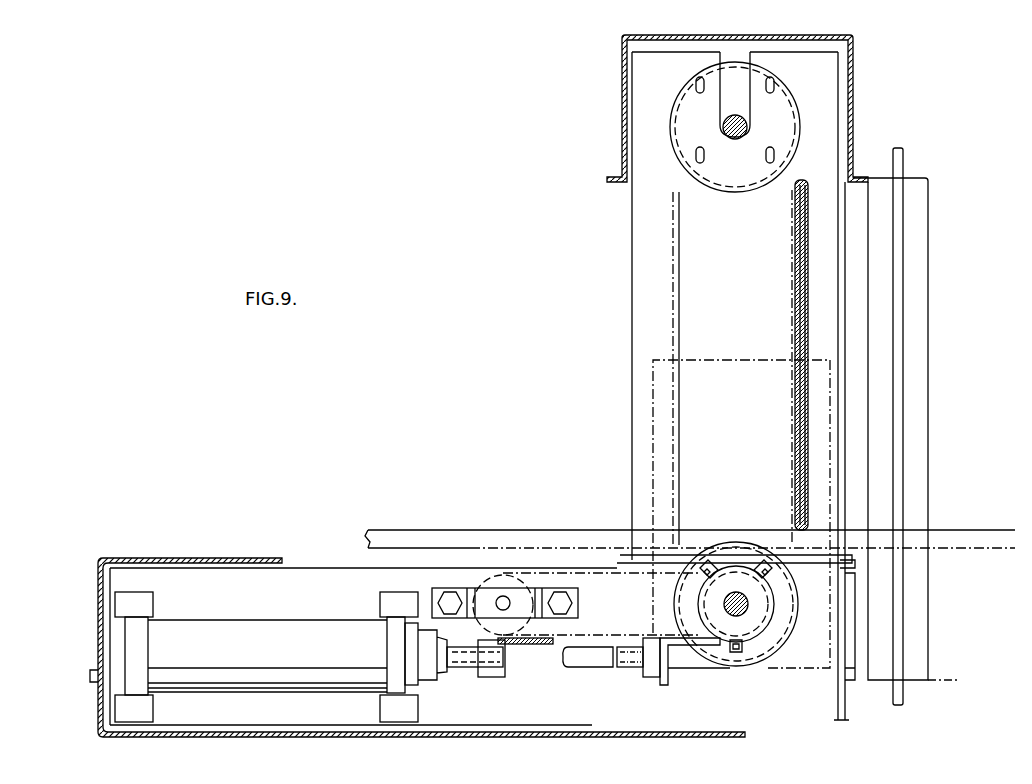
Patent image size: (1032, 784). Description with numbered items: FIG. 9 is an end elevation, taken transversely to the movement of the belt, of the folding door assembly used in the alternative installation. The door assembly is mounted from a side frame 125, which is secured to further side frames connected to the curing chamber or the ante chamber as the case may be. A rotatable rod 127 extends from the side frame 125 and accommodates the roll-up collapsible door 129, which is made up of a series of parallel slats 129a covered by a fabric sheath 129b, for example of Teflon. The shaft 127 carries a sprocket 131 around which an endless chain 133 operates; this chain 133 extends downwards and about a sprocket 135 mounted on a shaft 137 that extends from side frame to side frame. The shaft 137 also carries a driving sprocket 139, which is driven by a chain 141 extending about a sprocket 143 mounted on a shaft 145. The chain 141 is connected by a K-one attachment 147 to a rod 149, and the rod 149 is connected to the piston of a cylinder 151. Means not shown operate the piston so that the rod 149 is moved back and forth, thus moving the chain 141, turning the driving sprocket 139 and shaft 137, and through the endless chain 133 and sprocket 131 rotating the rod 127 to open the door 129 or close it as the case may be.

The side frame 125 is at (845, 525).
The rotatable rod 127 is at (750, 127).
The roll-up collapsible door 129 is at (802, 228).
The parallel slats 129a is at (802, 244).
The fabric sheath 129b is at (802, 262).
The sprocket 131 is at (708, 187).
The endless chain 133 is at (675, 303).
The sprocket 135 is at (790, 613).
The shaft 137 is at (736, 592).
The driving sprocket 139 is at (757, 628).
The chain 141 is at (530, 587).
The sprocket 143 is at (503, 583).
The shaft 145 is at (507, 598).
The K-1 attachment 147 is at (542, 644).
The rod 149 is at (450, 670).
The cylinder 151 is at (213, 693).